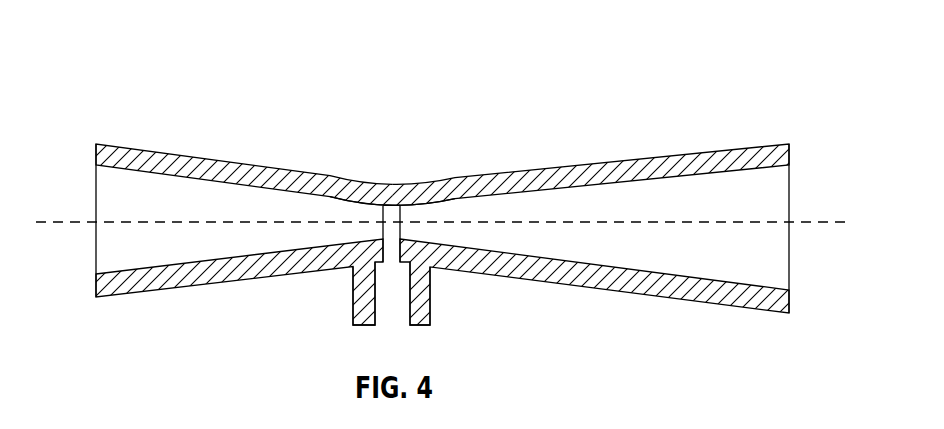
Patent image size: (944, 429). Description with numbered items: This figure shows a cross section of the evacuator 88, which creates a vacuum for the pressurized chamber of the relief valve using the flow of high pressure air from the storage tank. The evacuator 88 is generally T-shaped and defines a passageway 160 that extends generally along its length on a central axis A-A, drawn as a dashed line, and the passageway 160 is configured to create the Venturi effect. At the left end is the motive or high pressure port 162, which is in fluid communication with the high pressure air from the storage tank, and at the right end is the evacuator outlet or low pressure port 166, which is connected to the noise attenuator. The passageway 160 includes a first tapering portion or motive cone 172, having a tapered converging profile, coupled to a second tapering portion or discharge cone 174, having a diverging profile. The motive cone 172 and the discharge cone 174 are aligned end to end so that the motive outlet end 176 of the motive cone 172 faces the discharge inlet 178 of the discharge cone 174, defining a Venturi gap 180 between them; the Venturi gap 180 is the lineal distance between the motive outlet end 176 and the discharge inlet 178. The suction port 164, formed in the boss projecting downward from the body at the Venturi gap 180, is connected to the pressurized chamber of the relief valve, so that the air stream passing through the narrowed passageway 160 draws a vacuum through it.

The evacuator 88 is at (801, 62).
The passageway 160 is at (233, 258).
The motive or high pressure port 162 is at (96, 260).
The suction port 164 is at (392, 288).
The evacuator outlet or low pressure port 166 is at (752, 169).
The first tapering portion or motive cone 172 is at (170, 178).
The second tapering portion or discharge cone 174 is at (622, 184).
The motive outlet end 176 is at (383, 229).
The discharge inlet 178 is at (400, 229).
The Venturi gap 180 is at (391, 215).